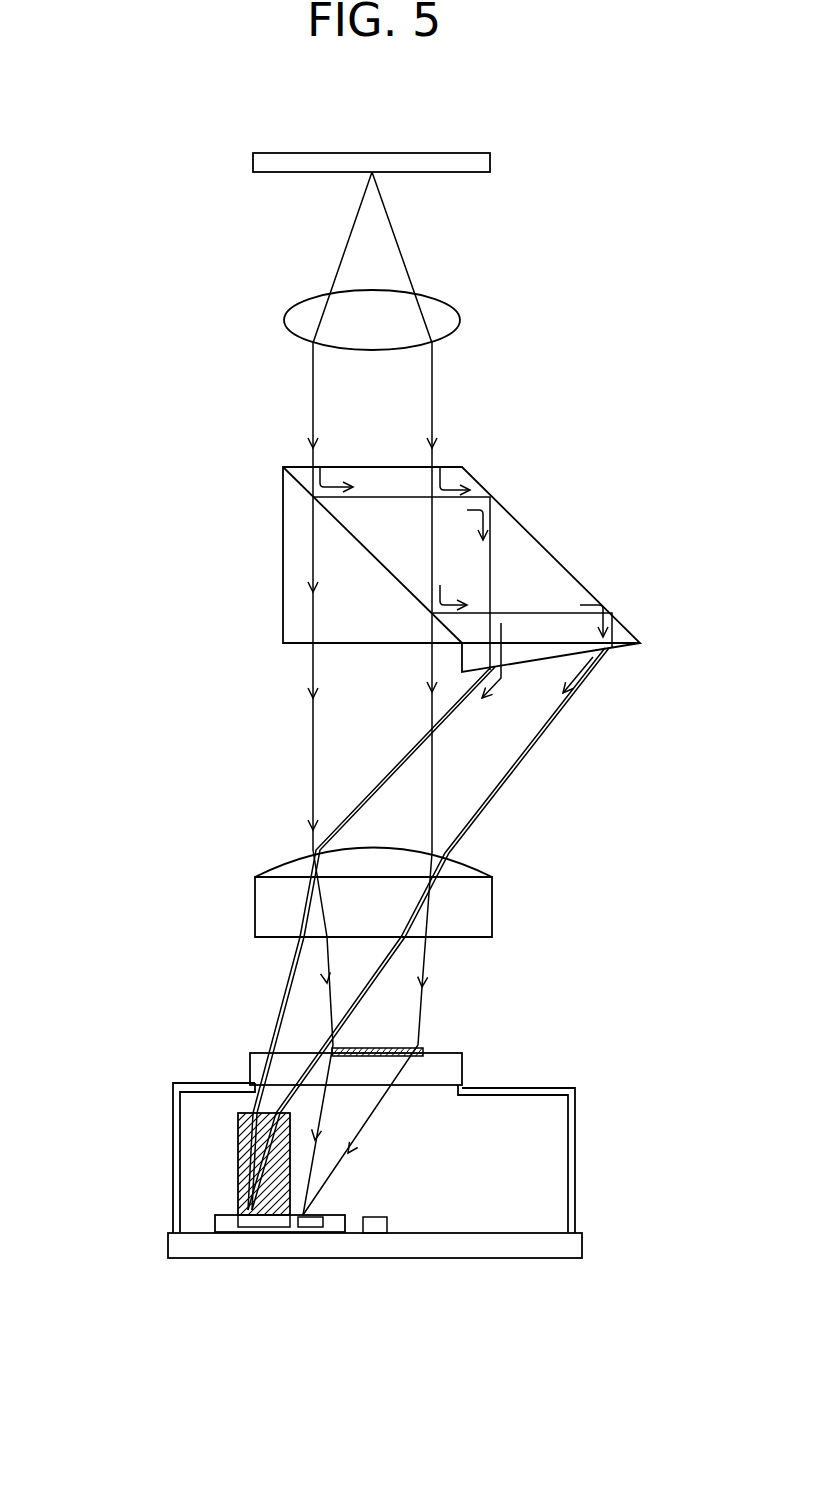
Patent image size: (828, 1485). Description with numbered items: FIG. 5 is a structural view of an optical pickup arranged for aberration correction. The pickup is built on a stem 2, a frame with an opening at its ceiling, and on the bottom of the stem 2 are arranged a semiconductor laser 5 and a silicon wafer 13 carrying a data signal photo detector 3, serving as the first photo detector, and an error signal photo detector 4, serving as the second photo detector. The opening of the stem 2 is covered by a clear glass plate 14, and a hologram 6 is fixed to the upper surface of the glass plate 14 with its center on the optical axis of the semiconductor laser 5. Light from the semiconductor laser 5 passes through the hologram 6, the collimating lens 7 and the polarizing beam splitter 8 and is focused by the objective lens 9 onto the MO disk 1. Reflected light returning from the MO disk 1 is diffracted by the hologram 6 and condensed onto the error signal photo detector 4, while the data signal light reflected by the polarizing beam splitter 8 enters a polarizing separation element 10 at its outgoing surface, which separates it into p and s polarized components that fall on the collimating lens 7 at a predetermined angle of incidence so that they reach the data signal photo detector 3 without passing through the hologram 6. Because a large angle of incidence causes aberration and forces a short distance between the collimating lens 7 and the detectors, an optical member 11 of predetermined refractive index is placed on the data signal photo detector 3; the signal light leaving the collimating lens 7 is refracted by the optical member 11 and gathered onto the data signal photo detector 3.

The MO disk 1 is at (478, 163).
The stem 2 is at (570, 1252).
The data signal photo detector 3 is at (260, 1227).
The error signal photo detector 4 is at (313, 1227).
The semiconductor laser 5 is at (373, 1233).
The hologram 6 is at (440, 1040).
The collimating lens 7 is at (472, 910).
The polarizing beam splitter 8 is at (513, 538).
The objective lens 9 is at (447, 320).
The polarizing separation element 10 is at (560, 650).
The optical member 11 is at (237, 1168).
The silicon wafer 13 is at (337, 1215).
The glass plate 14 is at (453, 1072).